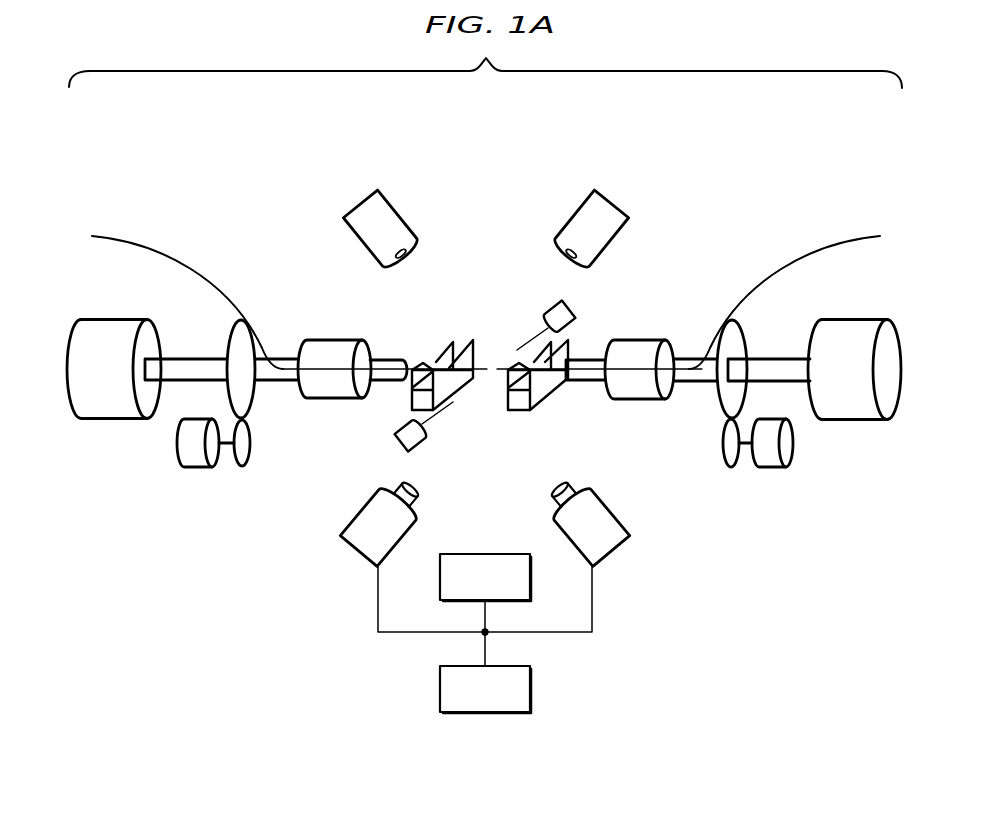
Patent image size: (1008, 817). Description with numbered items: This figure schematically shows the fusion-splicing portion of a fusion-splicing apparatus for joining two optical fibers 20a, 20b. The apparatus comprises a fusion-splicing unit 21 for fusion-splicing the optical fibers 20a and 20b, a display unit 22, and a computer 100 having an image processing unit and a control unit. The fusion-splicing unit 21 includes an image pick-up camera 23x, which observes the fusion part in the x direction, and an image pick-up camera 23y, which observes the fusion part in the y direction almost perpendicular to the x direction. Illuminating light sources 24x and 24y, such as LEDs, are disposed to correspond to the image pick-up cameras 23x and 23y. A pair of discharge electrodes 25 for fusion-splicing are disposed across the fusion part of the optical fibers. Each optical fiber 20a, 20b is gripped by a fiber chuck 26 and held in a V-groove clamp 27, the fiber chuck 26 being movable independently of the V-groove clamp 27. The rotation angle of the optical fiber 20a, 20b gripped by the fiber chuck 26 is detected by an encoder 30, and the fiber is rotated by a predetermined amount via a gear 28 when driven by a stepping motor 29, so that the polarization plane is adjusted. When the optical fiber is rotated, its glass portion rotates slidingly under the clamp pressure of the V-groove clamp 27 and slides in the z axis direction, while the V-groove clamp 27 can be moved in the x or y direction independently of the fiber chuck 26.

The optical fiber 20a is at (171, 246).
The optical fiber 20b is at (800, 248).
The fusion-splicing unit 21 is at (507, 186).
The display unit 22 is at (533, 687).
The image pick-up camera 23x is at (355, 553).
The image pick-up camera 23y is at (617, 553).
The illuminating light source 24x is at (618, 200).
The illuminating light source 24y is at (355, 200).
The discharge electrode 25 is at (449, 412).
The fiber chuck 26 is at (336, 340).
The V-groove clamp 27 is at (450, 344).
The gear 28 is at (230, 326).
The stepping motor 29 is at (176, 443).
The encoder 30 is at (120, 319).
The computer 100 is at (483, 553).